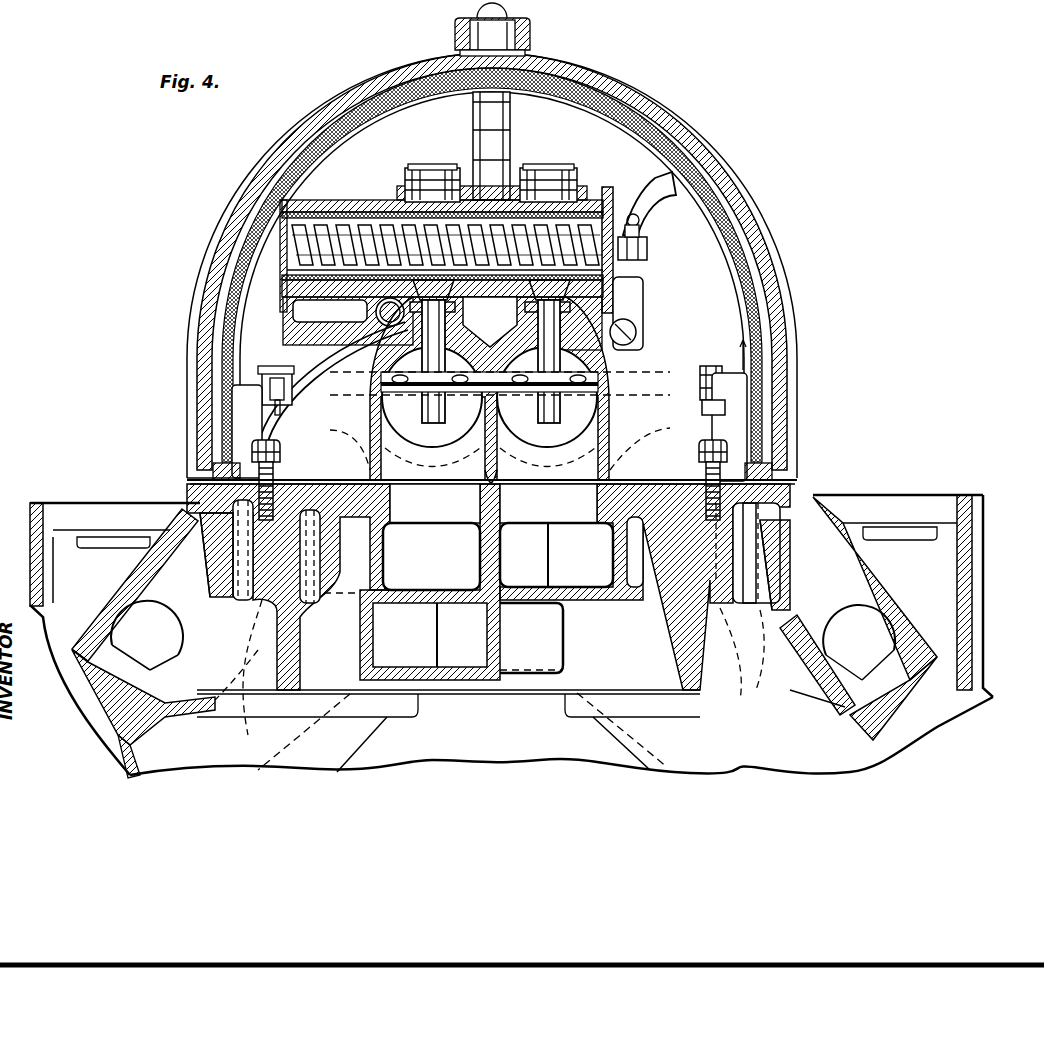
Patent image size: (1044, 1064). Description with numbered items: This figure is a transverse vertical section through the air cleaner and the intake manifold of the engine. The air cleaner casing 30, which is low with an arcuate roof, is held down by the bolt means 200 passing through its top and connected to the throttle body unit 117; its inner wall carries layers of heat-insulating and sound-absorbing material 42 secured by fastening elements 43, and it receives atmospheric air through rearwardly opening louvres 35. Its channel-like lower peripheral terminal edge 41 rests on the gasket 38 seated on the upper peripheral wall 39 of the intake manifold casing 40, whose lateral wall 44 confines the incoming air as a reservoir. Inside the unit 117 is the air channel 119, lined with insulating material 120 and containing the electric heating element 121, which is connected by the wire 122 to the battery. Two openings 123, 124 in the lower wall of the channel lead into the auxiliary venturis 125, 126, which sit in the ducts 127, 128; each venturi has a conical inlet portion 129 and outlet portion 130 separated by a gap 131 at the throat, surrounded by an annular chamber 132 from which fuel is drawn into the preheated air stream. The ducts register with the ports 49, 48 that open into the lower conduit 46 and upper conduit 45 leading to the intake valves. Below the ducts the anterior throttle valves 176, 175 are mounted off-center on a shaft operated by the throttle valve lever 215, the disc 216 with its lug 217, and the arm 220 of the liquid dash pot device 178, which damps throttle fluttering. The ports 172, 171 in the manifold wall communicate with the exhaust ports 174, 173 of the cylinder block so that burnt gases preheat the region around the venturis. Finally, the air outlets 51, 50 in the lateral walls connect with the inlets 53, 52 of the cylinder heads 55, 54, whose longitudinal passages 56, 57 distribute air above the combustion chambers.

The air cleaner casing 30 is at (778, 262).
The heat-insulating and sound-absorbing material 42 is at (573, 97).
The bolt means 200 is at (531, 36).
The fastening elements 43 is at (477, 103).
The air channel 119 is at (335, 206).
The electric heating element 121 is at (360, 228).
The insulating material 120 is at (512, 185).
The throttle body unit 117 is at (621, 186).
The wire 122 is at (666, 196).
The opening 124 is at (614, 274).
The opening 123 is at (348, 321).
The auxiliary venturi 125 is at (390, 327).
The inlet portion 129 is at (462, 306).
The auxiliary venturi 126 is at (636, 336).
The duct 127 is at (372, 445).
The outlet portion 130 is at (422, 404).
The annular chamber 132 is at (491, 351).
The gap 131 is at (500, 373).
The anterior throttle valve 176 is at (432, 442).
The anterior throttle valve 175 is at (548, 442).
The duct 128 is at (488, 474).
The throttle valve lever 215 is at (347, 420).
The disc 216 is at (262, 372).
The lug 217 is at (280, 370).
The arm 220 is at (700, 370).
The louvres 35 is at (233, 395).
The liquid dash pot device 178 is at (706, 428).
The gasket 38 is at (263, 440).
The lower peripheral terminal edge 41 is at (198, 476).
The upper peripheral wall 39 is at (776, 486).
The port 49 is at (435, 486).
The port 48 is at (552, 486).
The lower conduit 46 is at (466, 670).
The upper conduit 45 is at (592, 585).
The port 172 is at (322, 487).
The port 171 is at (664, 487).
The intake manifold casing 40 is at (249, 540).
The lateral wall 44 is at (748, 560).
The cylinder head 55 is at (26, 550).
The longitudinal passage 56 is at (143, 643).
The inlet 53 is at (222, 545).
The air outlet 51 is at (228, 560).
The port 174 is at (258, 706).
The cylinder head 54 is at (994, 609).
The longitudinal passage 57 is at (858, 618).
The inlet 52 is at (792, 548).
The air outlet 50 is at (780, 568).
The port 173 is at (716, 706).